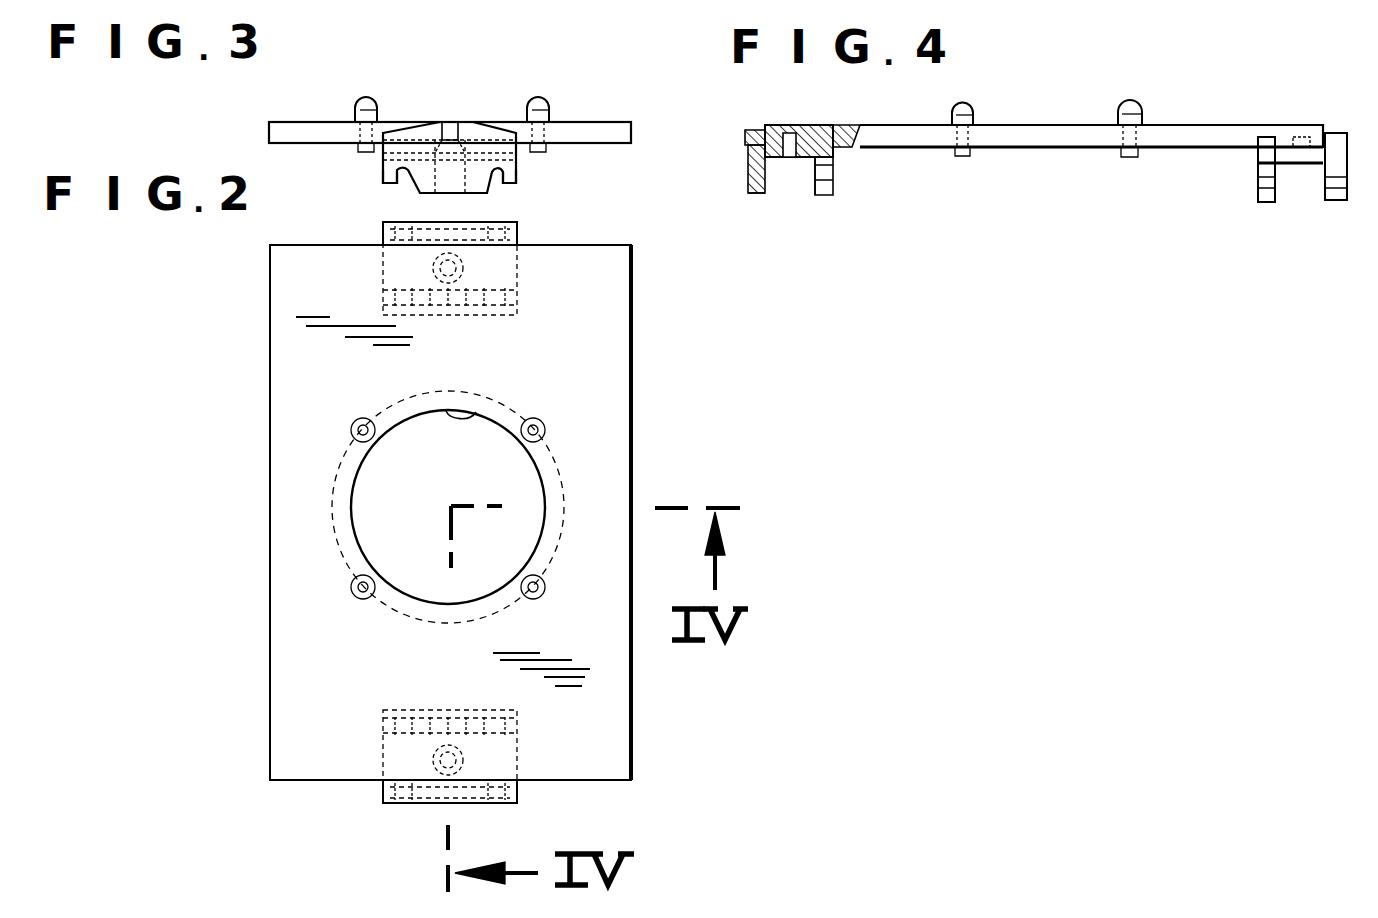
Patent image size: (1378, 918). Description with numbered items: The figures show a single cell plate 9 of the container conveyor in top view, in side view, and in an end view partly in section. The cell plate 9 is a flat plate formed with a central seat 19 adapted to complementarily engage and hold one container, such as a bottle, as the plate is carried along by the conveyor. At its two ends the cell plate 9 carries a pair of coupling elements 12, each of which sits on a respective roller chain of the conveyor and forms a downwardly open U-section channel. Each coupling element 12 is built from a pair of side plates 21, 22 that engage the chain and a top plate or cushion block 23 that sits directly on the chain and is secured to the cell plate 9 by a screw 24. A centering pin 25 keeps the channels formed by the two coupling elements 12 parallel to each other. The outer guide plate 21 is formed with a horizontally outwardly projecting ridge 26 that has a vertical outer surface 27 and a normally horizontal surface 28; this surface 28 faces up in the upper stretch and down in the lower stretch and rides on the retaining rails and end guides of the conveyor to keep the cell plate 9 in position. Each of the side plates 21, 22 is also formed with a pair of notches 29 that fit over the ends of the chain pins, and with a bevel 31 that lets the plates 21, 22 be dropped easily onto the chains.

In FIG. 3, the cell plate 9 is at (594, 135).
In FIG. 2, the cell plate 9 is at (590, 457).
In FIG. 4, the cell plate 9 is at (912, 133).
In FIG. 3, the coupling element 12 is at (475, 136).
In FIG. 2, the coupling element 12 is at (517, 240).
In FIG. 4, the coupling element 12 is at (999, 184).
In FIG. 2, the seat 19 is at (500, 415).
In FIG. 4, the outer side plate 21 is at (763, 195).
In FIG. 4, the side plate 22 is at (835, 185).
In FIG. 4, the top plate or cushion block 23 is at (800, 135).
In FIG. 4, the screw 24 is at (800, 160).
In FIG. 4, the centering pin 25 is at (838, 148).
In FIG. 4, the ridge 26 is at (750, 152).
In FIG. 4, the vertical outer surface 27 is at (745, 135).
In FIG. 4, the horizontal surface 28 is at (755, 128).
In FIG. 3, the notch 29 is at (383, 170).
In FIG. 3, the bevel 31 is at (490, 194).